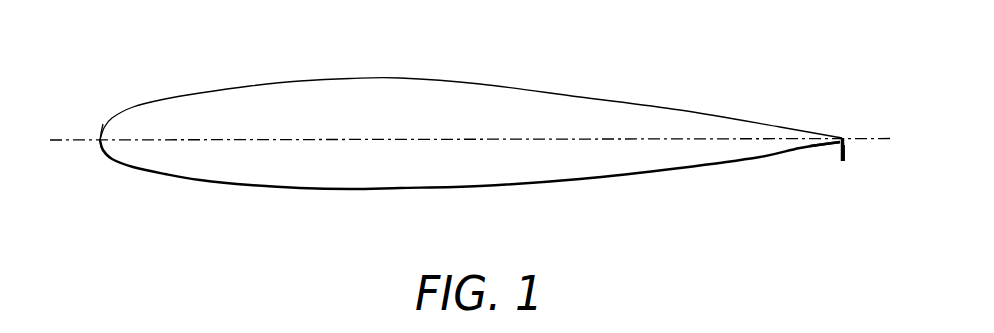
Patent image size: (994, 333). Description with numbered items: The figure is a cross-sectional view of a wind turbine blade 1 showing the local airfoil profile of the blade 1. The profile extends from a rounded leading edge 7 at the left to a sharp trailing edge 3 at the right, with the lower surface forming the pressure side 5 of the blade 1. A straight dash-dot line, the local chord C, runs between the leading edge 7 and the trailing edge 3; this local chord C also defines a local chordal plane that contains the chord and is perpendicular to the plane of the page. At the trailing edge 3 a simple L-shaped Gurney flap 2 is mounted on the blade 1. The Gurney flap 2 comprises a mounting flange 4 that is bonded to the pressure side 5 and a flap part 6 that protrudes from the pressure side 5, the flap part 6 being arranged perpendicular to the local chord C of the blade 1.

The wind turbine blade 1 is at (250, 60).
The Gurney flap 2 is at (843, 176).
The trailing edge 3 is at (843, 138).
The mounting flange 4 is at (827, 145).
The pressure side 5 is at (472, 193).
The flap part 6 is at (846, 156).
The leading edge 7 is at (100, 140).
The local chord C is at (345, 139).